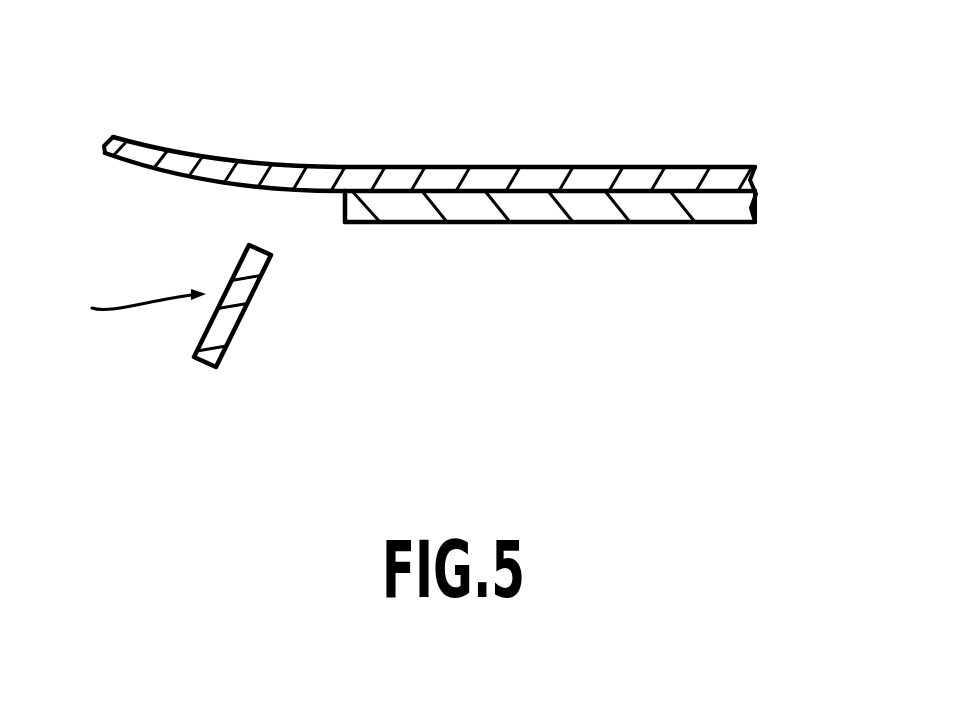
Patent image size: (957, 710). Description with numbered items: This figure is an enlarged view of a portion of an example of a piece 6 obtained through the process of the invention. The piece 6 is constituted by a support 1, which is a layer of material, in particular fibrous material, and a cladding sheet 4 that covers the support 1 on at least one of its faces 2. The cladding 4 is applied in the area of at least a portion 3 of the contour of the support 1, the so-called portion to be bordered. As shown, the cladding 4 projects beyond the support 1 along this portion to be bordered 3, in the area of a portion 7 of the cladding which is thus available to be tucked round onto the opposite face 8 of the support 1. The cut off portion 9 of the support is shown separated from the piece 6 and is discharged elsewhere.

The support 1 is at (655, 224).
The face 2 is at (538, 172).
The portion to be bordered 3 is at (328, 210).
The cladding sheet 4 is at (690, 167).
The piece 6 is at (490, 102).
The portion 7 is at (226, 150).
The opposite face 8 is at (538, 234).
The cut off portion 9 is at (135, 306).